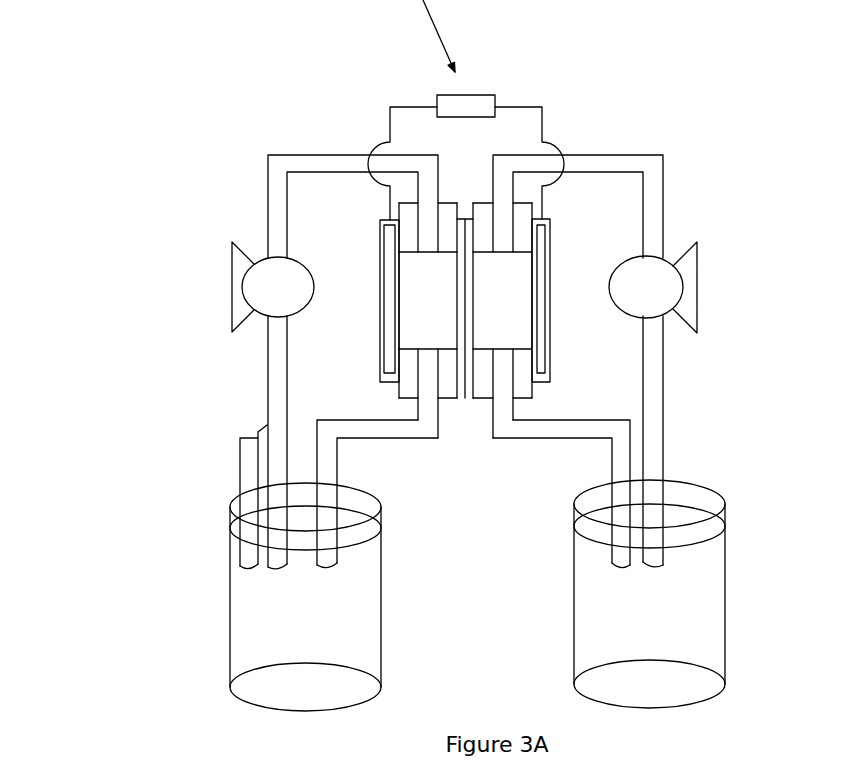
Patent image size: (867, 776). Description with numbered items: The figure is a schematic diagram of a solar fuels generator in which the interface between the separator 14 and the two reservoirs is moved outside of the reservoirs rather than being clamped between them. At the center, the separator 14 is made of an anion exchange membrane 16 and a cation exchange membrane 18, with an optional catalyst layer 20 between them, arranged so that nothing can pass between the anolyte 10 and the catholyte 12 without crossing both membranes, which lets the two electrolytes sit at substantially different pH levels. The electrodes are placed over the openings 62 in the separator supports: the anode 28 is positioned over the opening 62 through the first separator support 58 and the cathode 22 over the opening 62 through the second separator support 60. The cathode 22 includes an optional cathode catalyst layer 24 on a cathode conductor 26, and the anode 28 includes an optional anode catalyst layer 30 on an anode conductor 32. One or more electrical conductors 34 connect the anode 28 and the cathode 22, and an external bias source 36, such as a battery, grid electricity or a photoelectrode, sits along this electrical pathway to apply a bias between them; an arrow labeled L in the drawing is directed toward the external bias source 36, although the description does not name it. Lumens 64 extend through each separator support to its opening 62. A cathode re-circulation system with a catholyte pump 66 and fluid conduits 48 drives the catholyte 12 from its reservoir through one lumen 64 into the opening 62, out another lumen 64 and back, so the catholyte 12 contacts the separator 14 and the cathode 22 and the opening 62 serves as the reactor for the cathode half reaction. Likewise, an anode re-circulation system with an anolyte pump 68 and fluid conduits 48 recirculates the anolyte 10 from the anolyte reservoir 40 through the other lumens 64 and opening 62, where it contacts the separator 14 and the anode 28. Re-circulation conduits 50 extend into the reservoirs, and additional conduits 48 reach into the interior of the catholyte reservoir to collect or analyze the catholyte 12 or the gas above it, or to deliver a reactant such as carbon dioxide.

The load / electrical connection L is at (426, 10).
The anolyte 10 is at (595, 607).
The catholyte 12 is at (245, 633).
The separator 14 is at (453, 285).
The anion exchange membrane 16 is at (468, 320).
The cation exchange membrane 18 is at (457, 331).
The catalyst layer 20 is at (442, 222).
The cathode 22 is at (415, 278).
The cathode catalyst layer 24 is at (380, 271).
The cathode conductor 26 is at (387, 355).
The anode 28 is at (552, 346).
The anode catalyst layer 30 is at (535, 303).
The anode conductor 32 is at (547, 272).
The electrical conductors 34 is at (423, 107).
The external bias source 36 is at (454, 95).
The anolyte reservoir 40 is at (728, 610).
The fluid conduits 48 is at (238, 472).
The re-circulation conduits 50 is at (267, 213).
The first separator support 58 is at (390, 401).
The second separator support 60 is at (535, 402).
The openings 62 is at (372, 302).
The lumens 64 is at (441, 200).
The catholyte pump 66 is at (303, 265).
The anolyte pump 68 is at (613, 271).